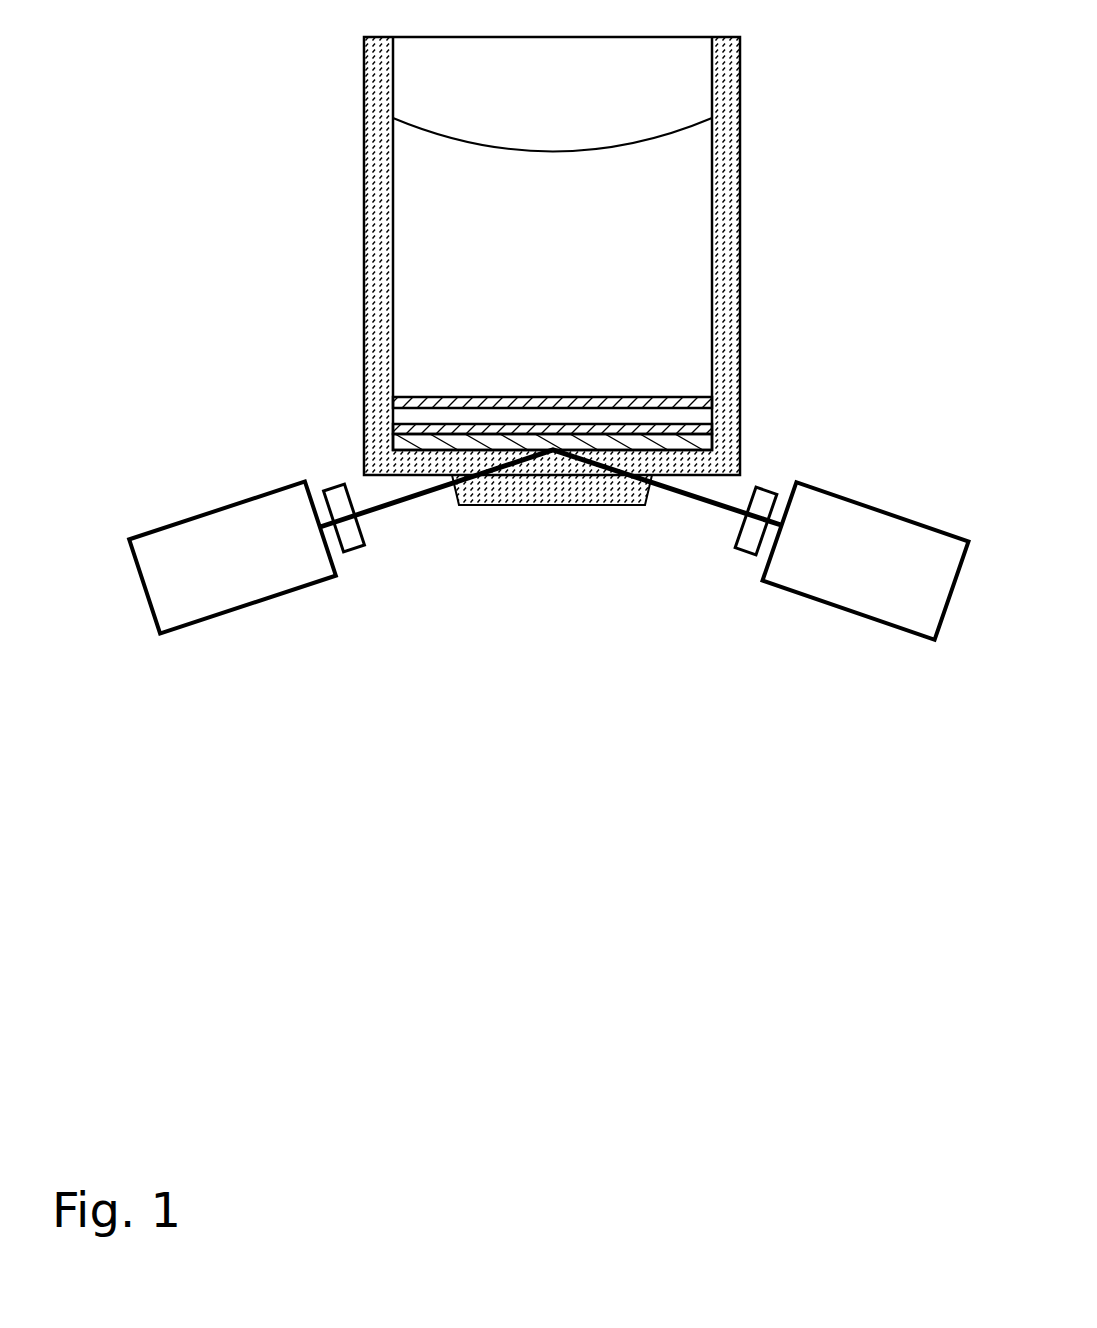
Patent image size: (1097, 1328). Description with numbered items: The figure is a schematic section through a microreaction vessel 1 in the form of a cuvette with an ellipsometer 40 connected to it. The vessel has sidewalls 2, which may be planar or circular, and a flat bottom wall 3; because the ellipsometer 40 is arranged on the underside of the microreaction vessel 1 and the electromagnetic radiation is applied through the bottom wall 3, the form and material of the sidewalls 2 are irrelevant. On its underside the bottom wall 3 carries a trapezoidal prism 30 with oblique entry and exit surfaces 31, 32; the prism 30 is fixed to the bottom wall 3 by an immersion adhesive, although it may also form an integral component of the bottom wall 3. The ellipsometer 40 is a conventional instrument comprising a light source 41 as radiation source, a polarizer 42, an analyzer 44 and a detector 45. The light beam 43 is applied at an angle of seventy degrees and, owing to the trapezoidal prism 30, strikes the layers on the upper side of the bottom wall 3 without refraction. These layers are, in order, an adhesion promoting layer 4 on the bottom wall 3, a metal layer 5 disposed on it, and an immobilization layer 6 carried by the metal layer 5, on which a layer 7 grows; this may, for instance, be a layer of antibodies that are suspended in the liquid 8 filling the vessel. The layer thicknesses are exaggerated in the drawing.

The microreaction vessel 1 is at (290, 181).
The sidewalls 2 is at (725, 173).
The bottom wall 3 is at (397, 458).
The adhesion promoting layer 4 is at (702, 438).
The metal layer 5 is at (400, 421).
The immobilization layer 6 is at (700, 412).
The layer 7 is at (395, 402).
The liquid 8 is at (657, 257).
The trapezoidal prism 30 is at (553, 493).
The entry surface 31 is at (458, 495).
The exit surface 32 is at (648, 495).
The ellipsometer 40 is at (548, 603).
The light source 41 is at (197, 605).
The polarizer 42 is at (353, 550).
The light beam 43 is at (390, 507).
The analyzer 44 is at (738, 550).
The detector 45 is at (893, 600).